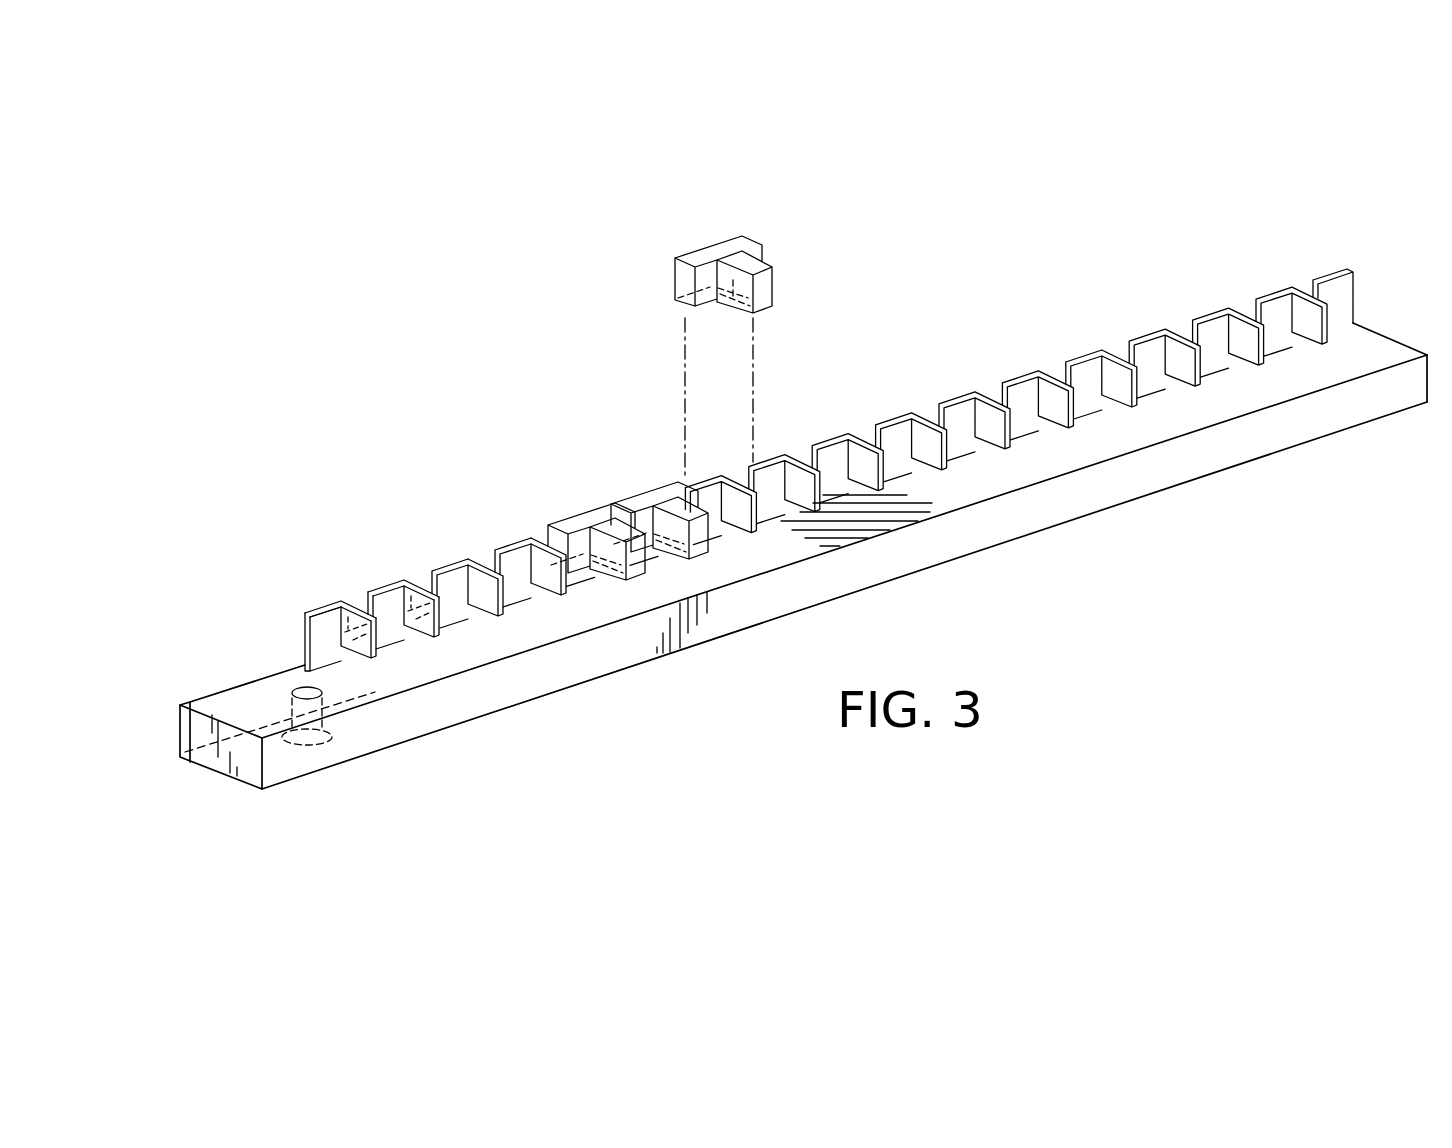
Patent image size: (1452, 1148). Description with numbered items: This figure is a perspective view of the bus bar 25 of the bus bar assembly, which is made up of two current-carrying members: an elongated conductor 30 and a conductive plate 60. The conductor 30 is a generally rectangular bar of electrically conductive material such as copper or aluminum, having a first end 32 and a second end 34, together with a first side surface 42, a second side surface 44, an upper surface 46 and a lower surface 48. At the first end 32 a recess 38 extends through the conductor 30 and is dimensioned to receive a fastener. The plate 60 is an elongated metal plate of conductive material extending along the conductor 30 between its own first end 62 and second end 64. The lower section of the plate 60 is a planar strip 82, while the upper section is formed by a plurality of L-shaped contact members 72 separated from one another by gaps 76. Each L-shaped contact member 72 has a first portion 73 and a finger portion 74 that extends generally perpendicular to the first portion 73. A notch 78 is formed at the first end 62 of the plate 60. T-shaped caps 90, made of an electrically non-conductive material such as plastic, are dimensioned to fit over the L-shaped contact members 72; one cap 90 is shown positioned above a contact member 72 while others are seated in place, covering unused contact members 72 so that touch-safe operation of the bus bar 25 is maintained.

The bus bar 25 is at (782, 520).
The conductor 30 is at (782, 567).
The first end 32 is at (245, 773).
The second end 34 is at (1393, 340).
The recess 38 is at (300, 690).
The first side surface 42 is at (180, 717).
The second side surface 44 is at (592, 662).
The upper surface 46 is at (467, 652).
The lower surface 48 is at (555, 692).
The plate 60 is at (798, 522).
The first end 62 is at (180, 735).
The second end 64 is at (1353, 296).
The L-shaped contact member 72 is at (374, 588).
The first portion 73 is at (325, 622).
The finger portion 74 is at (428, 622).
The gap 76 is at (487, 558).
The notch 78 is at (270, 675).
The planar strip 82 is at (213, 690).
The T-shaped cap 90 is at (722, 247).